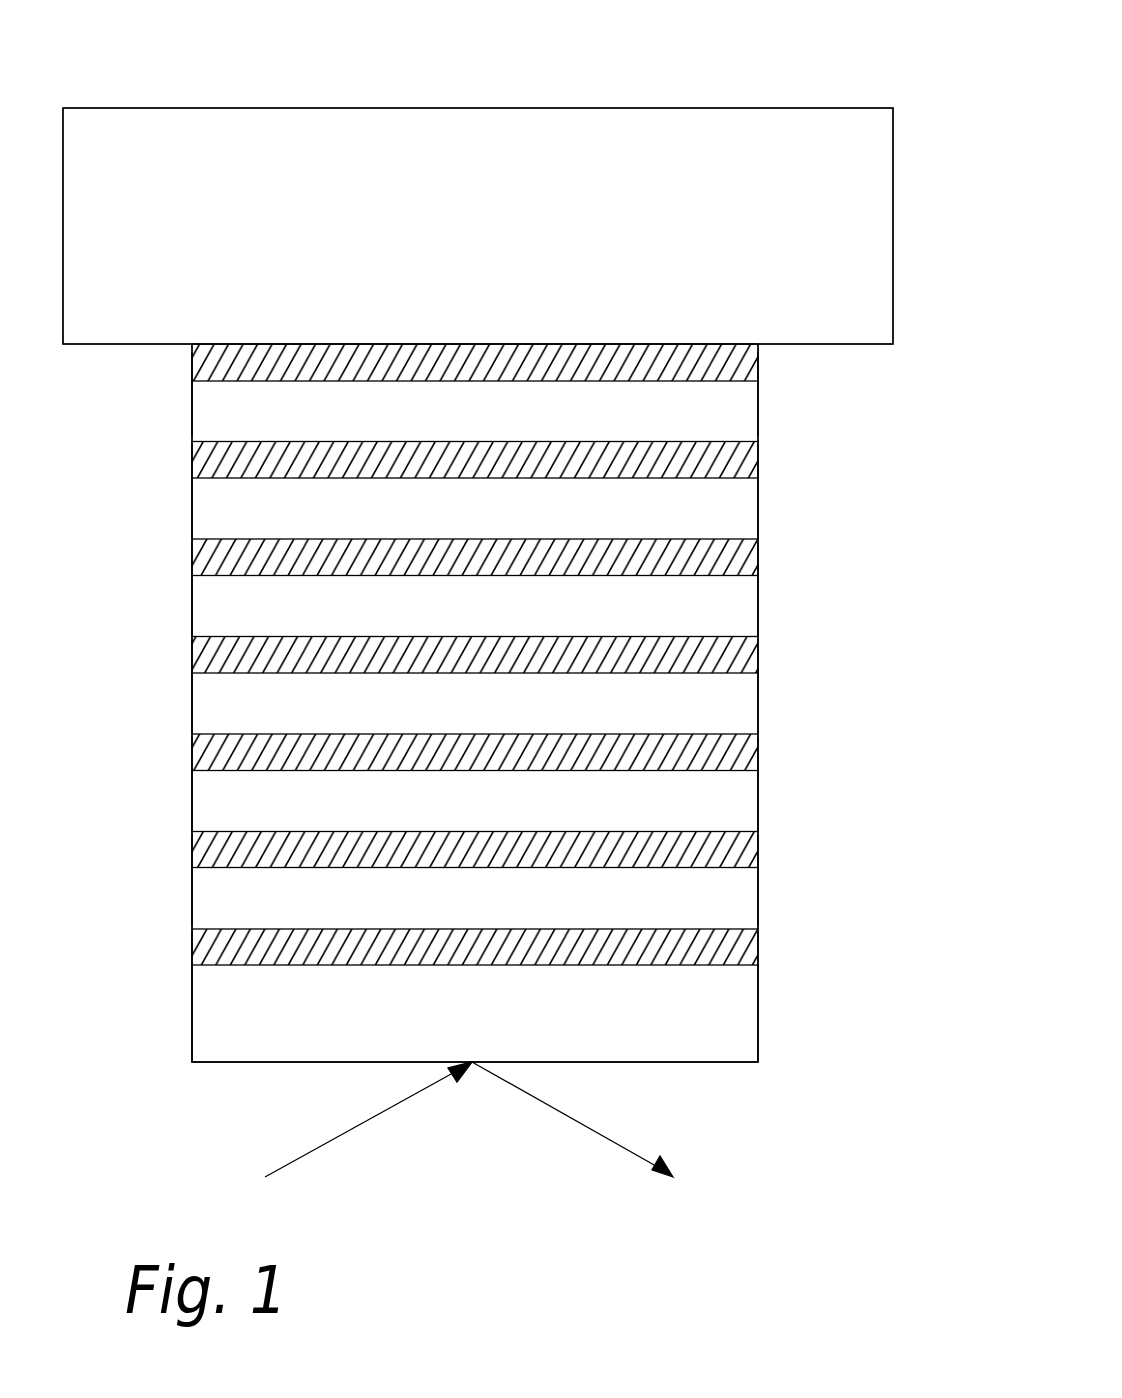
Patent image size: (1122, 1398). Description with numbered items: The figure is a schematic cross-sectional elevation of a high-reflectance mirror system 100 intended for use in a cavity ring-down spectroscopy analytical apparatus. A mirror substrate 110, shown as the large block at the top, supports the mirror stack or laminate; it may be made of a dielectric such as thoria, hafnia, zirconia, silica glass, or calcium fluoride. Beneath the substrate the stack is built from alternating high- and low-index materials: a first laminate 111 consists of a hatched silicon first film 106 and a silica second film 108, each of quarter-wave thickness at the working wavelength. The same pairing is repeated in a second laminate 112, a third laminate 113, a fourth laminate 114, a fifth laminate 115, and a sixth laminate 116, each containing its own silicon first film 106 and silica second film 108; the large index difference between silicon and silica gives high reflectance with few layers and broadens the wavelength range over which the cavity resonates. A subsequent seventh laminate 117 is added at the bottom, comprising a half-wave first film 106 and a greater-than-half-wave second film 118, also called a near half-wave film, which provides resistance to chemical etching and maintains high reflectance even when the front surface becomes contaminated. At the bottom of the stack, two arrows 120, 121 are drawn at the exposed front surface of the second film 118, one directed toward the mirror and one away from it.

The high-reflectance mirror system 100 is at (807, 75).
The mirror substrate 110 is at (877, 210).
The silicon first film 106 is at (758, 366).
The silica second film 108 is at (750, 406).
The first laminate 111 is at (182, 436).
The second laminate 112 is at (182, 444).
The third laminate 113 is at (182, 542).
The fourth laminate 114 is at (182, 640).
The fifth laminate 115 is at (182, 737).
The sixth laminate 116 is at (182, 834).
The seventh laminate 117 is at (182, 932).
The second film 118 is at (750, 1014).
The incident light 120 is at (353, 1128).
The reflected light 121 is at (583, 1128).